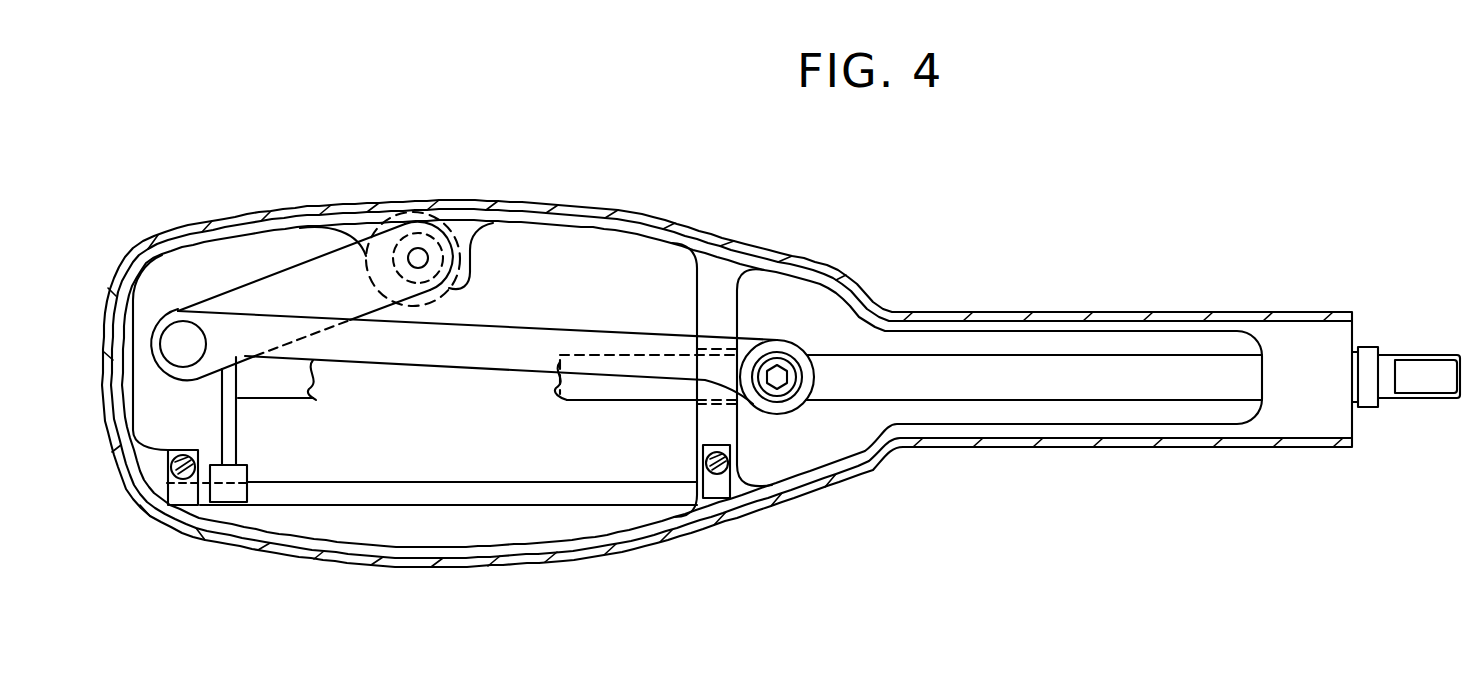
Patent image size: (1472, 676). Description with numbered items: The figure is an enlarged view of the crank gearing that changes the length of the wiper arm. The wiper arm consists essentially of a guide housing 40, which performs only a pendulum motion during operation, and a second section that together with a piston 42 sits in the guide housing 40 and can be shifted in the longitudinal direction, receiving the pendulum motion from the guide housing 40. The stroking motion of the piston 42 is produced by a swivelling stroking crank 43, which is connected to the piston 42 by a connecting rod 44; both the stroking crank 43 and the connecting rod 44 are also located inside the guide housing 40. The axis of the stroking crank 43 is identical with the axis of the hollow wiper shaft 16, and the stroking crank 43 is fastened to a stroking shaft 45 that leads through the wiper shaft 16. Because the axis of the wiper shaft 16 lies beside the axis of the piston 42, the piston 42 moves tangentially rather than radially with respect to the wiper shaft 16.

The wiper shaft 16 is at (408, 230).
The guide housing 40 is at (1033, 312).
The piston 42 is at (1162, 365).
The stroking crank 43 is at (323, 267).
The connecting rod 44 is at (470, 355).
The stroking shaft 45 is at (421, 257).